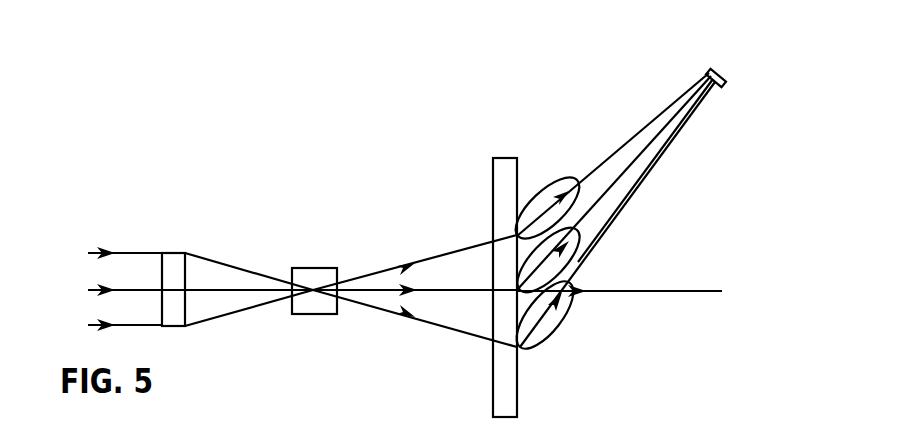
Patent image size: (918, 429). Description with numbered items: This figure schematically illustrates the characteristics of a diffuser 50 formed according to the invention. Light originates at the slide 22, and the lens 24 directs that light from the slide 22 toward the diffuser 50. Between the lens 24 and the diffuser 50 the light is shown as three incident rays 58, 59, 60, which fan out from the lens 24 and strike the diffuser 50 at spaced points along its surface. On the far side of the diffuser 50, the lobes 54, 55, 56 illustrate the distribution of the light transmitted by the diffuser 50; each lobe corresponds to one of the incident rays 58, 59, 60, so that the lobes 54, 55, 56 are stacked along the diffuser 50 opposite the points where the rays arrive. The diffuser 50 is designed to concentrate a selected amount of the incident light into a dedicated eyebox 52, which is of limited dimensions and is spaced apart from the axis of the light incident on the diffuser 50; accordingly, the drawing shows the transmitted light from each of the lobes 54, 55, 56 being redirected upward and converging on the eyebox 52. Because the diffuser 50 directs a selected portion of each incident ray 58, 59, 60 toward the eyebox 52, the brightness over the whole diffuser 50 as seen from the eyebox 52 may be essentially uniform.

The slide 22 is at (171, 253).
The lens 24 is at (309, 268).
The diffuser 50 is at (503, 158).
The eyebox 52 is at (722, 75).
The lobe 54 is at (554, 184).
The lobe 55 is at (590, 249).
The lobe 56 is at (551, 338).
The incident ray 58 is at (433, 263).
The incident ray 59 is at (456, 290).
The incident ray 60 is at (427, 322).